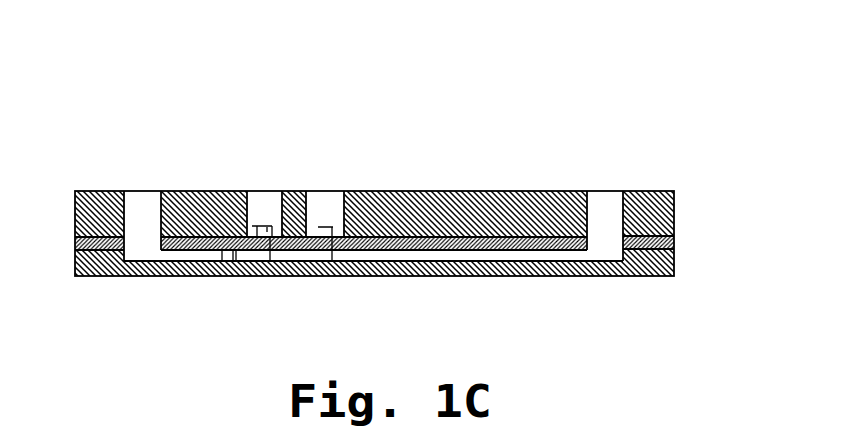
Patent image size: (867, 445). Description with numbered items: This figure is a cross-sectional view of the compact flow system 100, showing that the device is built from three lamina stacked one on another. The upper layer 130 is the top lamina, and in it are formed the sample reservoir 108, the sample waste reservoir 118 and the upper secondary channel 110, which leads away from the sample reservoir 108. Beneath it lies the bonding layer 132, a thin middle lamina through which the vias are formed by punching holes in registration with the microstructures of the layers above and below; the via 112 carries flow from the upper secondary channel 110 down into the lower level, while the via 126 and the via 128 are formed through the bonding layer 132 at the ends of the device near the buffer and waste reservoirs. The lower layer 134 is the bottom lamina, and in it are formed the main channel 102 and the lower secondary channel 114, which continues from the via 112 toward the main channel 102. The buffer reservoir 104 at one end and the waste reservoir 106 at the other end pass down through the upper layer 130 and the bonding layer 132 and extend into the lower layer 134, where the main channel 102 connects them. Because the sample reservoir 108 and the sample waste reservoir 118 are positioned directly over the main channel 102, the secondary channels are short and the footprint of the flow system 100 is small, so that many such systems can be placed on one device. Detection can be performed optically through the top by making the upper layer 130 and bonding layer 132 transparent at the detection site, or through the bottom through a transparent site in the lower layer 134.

The flow system 100 is at (505, 122).
The main channel 102 is at (480, 252).
The buffer reservoir 104 is at (143, 191).
The waste reservoir 106 is at (605, 191).
The sample reservoir 108 is at (265, 191).
The upper secondary channel 110 is at (272, 261).
The via 112 is at (222, 230).
The lower secondary channel 114 is at (233, 261).
The sample waste reservoir 118 is at (327, 191).
The via 126 is at (130, 244).
The via 128 is at (622, 240).
The upper layer 130 is at (670, 207).
The bonding layer 132 is at (673, 238).
The lower layer 134 is at (673, 260).